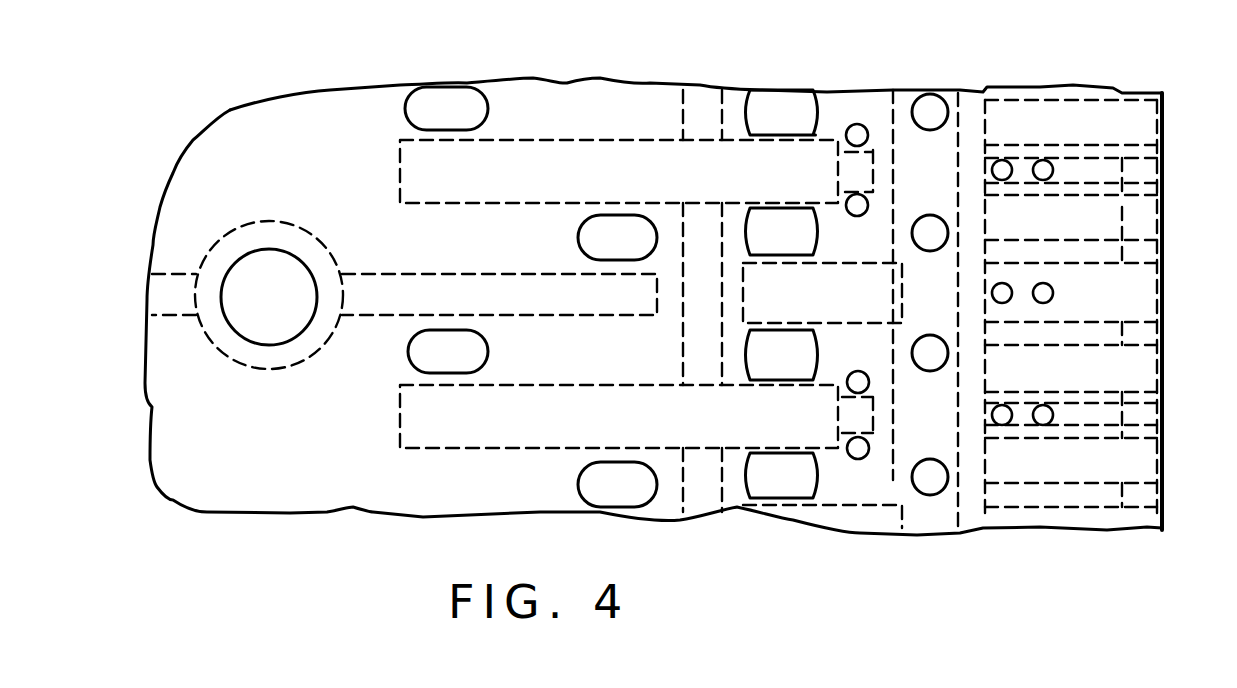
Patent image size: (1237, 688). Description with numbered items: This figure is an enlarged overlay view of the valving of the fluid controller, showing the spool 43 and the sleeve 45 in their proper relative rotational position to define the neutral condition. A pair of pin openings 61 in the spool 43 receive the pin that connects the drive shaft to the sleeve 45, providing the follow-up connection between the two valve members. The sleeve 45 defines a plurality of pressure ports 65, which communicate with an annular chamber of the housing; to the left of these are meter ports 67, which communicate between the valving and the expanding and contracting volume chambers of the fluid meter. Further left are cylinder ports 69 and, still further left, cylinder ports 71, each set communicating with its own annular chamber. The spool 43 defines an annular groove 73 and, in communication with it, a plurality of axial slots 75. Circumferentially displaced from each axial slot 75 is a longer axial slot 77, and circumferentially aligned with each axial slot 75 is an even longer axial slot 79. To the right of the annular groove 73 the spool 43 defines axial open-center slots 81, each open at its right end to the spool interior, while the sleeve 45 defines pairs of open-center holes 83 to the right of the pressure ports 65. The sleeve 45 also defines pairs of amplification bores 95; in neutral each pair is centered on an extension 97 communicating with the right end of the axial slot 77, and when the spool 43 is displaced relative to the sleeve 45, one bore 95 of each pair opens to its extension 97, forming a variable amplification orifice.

The spool 43 is at (335, 125).
The sleeve 45 is at (1162, 175).
The pin openings 61 is at (303, 236).
The pressure ports 65 is at (928, 110).
The meter ports 67 is at (778, 113).
The cylinder ports 69 is at (598, 228).
The cylinder ports 71 is at (447, 110).
The annular groove 73 is at (918, 285).
The axial slots 75 is at (822, 395).
The axial slot 77 is at (619, 301).
The axial slot 79 is at (404, 294).
The open-center slots 81 is at (1078, 168).
The open-center holes 83 is at (1000, 178).
The amplification bores 95 is at (857, 125).
The extension 97 is at (848, 172).